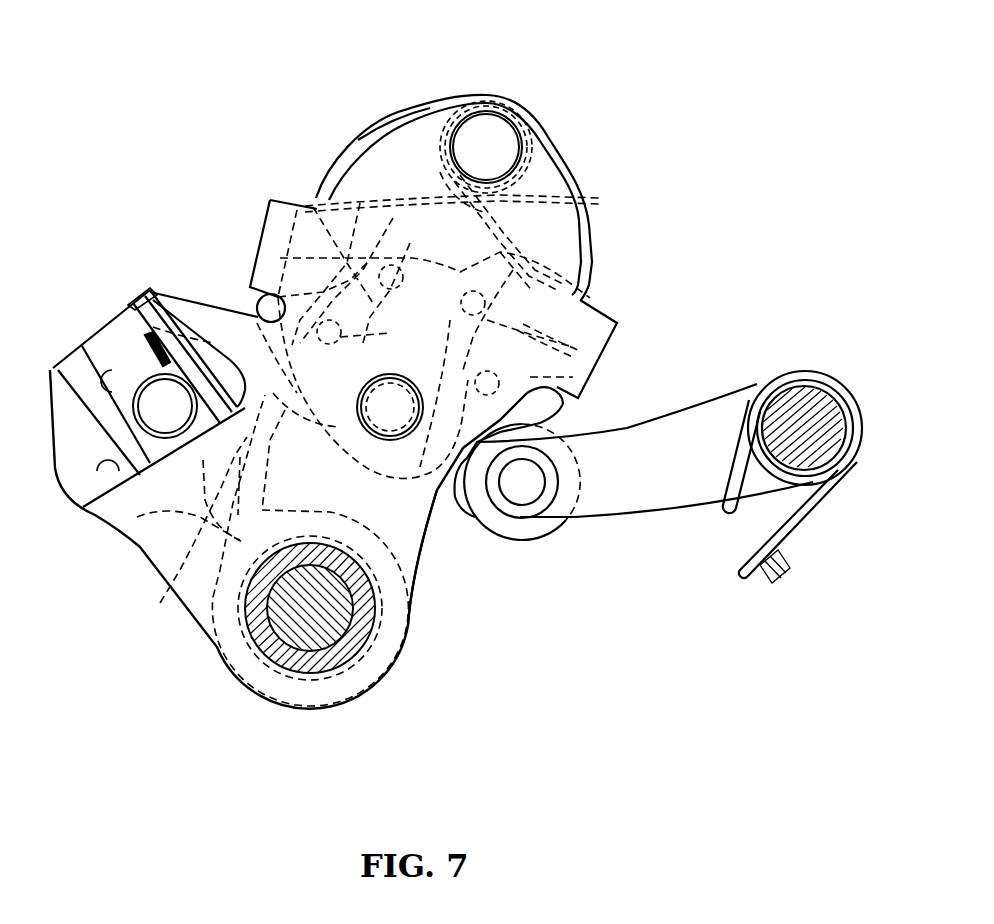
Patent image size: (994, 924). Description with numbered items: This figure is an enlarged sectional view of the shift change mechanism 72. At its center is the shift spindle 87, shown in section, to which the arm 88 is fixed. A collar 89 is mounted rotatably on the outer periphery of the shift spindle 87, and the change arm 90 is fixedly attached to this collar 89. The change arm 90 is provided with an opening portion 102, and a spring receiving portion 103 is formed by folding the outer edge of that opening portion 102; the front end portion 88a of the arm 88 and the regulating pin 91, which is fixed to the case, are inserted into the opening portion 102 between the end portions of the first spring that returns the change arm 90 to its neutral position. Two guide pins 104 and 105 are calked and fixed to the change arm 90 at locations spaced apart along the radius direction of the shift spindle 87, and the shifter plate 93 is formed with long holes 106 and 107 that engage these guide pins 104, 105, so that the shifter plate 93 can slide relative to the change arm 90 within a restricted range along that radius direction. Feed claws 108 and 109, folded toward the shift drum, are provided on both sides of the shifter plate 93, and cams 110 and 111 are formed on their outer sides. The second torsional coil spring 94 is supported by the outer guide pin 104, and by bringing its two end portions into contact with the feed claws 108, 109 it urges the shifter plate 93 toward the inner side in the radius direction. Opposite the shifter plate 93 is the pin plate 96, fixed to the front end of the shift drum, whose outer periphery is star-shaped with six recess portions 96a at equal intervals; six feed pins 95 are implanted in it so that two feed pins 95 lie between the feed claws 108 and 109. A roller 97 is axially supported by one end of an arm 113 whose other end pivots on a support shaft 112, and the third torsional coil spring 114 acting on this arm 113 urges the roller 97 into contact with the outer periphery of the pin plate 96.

The shift change mechanism 72 is at (429, 560).
The shift spindle 87 is at (308, 637).
The arm 88 is at (213, 607).
The front end portion 88a is at (210, 608).
The collar 89 is at (372, 700).
The change arm 90 is at (413, 527).
The regulating pin 91 is at (158, 432).
The shifter plate 93 is at (563, 167).
The second torsional coil spring 94 is at (600, 197).
The feed pins 95 is at (590, 378).
The pin plate 96 is at (255, 311).
The recess portions 96a is at (562, 410).
The roller 97 is at (542, 540).
The opening portion 102 is at (113, 470).
The spring receiving portion 103 is at (112, 377).
The guide pin 104 is at (490, 140).
The guide pin 105 is at (396, 392).
The long hole 106 is at (405, 112).
The long hole 107 is at (242, 321).
The feed claw 108 is at (246, 363).
The feed claw 109 is at (398, 283).
The cam 110 is at (280, 257).
The cam 111 is at (570, 357).
The support shaft 112 is at (808, 410).
The arm 113 is at (682, 493).
The third torsional coil spring 114 is at (803, 507).